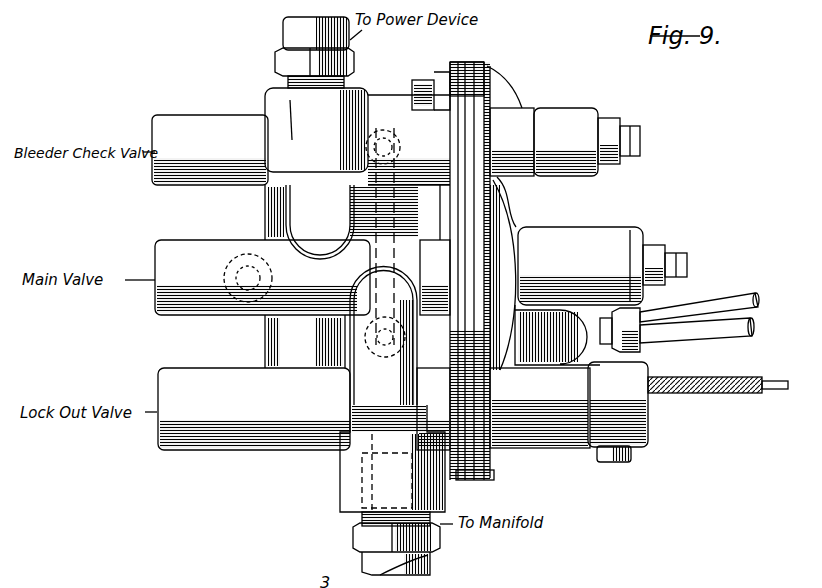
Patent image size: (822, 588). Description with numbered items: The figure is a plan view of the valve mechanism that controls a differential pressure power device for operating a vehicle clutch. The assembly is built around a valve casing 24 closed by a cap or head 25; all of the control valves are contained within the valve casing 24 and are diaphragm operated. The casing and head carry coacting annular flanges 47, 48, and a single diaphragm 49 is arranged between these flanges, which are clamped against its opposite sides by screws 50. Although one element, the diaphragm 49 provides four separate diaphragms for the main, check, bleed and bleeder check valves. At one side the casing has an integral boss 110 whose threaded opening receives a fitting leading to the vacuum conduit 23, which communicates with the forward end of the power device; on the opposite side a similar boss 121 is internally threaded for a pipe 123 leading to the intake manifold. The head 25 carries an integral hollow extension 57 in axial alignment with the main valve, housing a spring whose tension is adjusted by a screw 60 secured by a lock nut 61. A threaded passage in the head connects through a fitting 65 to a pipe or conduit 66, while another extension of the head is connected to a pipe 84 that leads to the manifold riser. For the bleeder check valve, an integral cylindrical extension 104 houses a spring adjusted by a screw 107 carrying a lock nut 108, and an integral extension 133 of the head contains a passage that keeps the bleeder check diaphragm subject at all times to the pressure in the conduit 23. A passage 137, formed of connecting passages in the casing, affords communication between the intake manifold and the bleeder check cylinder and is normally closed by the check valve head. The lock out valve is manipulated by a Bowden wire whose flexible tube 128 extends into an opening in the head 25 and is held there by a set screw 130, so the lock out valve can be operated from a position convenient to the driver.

The vacuum conduit 23 is at (283, 42).
The integral boss 110 is at (266, 102).
The annular flange 47 is at (456, 64).
The diaphragm 49 is at (468, 63).
The annular flange 48 is at (484, 64).
The screws 50 is at (424, 90).
The integral extension 133 is at (520, 115).
The cylindrical extension 104 is at (584, 112).
The lock nut 108 is at (622, 124).
The screw 107 is at (640, 138).
The cap or head 25 is at (562, 226).
The hollow extension 57 is at (626, 228).
The lock nut 61 is at (670, 258).
The screw 60 is at (690, 270).
The fitting 65 is at (636, 318).
The pipe 84 is at (722, 312).
The pipe or conduit 66 is at (726, 345).
The flexible tube 128 is at (748, 396).
The set screw 130 is at (630, 458).
The passage 137 is at (375, 266).
The valve casing 24 is at (200, 452).
The boss 121 is at (340, 490).
The pipe 123 is at (430, 562).